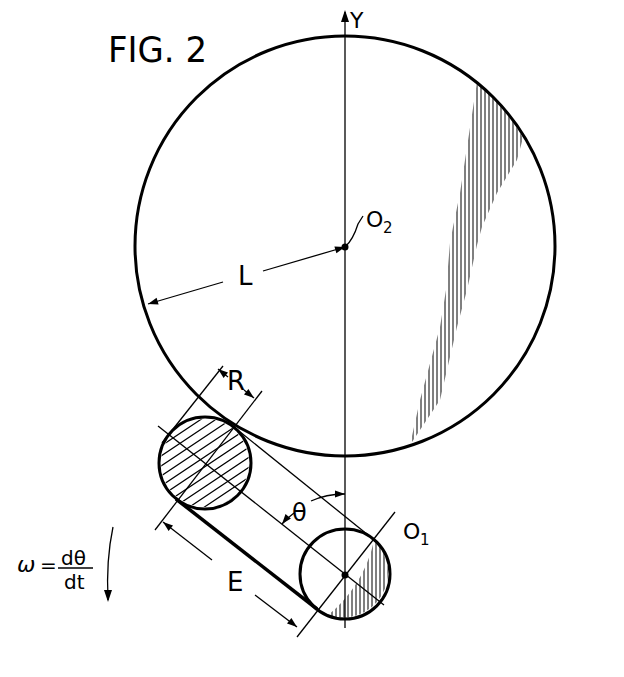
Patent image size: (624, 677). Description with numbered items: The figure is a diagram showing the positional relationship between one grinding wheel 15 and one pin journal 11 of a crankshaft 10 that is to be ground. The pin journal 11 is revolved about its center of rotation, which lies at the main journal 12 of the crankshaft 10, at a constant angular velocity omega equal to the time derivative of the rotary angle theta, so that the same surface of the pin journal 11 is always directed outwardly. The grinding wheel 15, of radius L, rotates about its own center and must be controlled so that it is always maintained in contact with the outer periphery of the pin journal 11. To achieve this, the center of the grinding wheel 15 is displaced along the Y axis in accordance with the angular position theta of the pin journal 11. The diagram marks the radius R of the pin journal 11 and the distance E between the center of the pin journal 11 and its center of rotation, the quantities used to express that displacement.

The crankshaft 10 is at (380, 629).
The pin journal 11 is at (172, 458).
The main journal 12 is at (393, 565).
The grinding wheel 15 is at (549, 300).